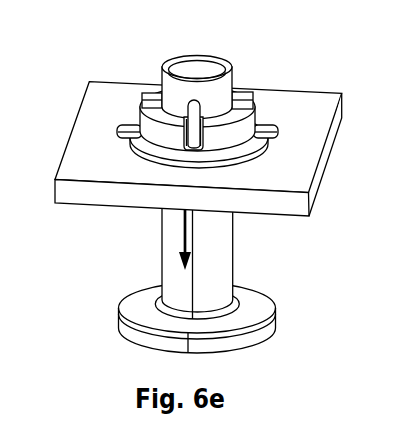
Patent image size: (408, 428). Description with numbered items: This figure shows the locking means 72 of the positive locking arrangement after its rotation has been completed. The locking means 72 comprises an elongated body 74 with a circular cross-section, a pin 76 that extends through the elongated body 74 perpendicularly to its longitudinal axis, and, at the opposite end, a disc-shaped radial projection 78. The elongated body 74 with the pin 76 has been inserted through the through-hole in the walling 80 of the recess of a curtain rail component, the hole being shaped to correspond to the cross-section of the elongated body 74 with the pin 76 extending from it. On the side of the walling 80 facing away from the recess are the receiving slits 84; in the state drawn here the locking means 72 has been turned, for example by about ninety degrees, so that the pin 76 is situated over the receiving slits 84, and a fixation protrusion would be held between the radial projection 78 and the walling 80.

The locking means 72 is at (247, 68).
The elongated body 74 is at (218, 257).
The pin 76 is at (191, 100).
The radial projection 78 is at (280, 326).
The walling 80 is at (66, 95).
The receiving slits 84 is at (186, 132).